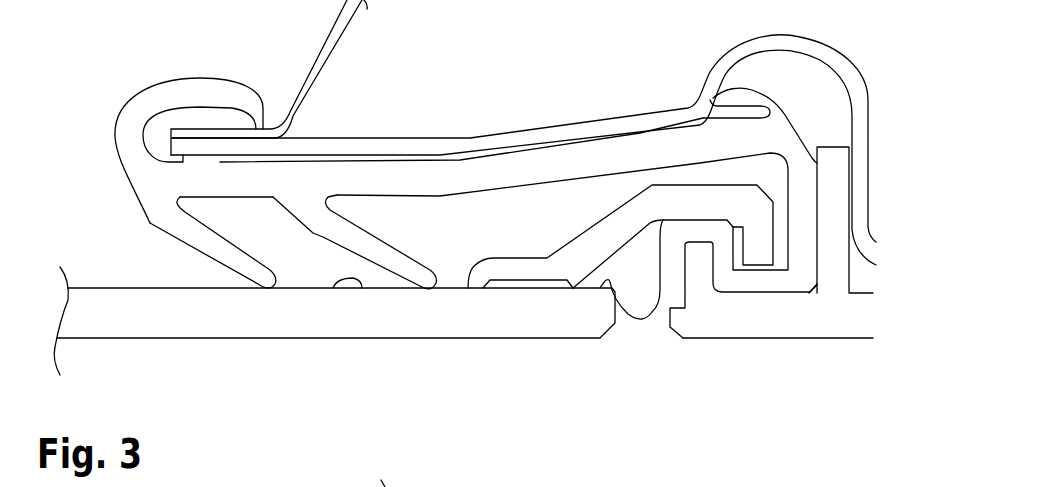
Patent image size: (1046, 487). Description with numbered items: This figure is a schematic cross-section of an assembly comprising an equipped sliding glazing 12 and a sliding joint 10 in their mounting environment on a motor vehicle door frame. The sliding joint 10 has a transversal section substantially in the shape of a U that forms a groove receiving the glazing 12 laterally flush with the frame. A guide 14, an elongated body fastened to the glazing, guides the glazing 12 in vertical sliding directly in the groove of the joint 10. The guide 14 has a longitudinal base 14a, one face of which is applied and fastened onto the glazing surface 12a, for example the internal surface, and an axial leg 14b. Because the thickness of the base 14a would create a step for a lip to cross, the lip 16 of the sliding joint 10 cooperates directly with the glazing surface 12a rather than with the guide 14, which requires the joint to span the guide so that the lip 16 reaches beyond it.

The sliding joint 10 is at (401, 178).
The sliding glazing 12 is at (463, 333).
The glazing surface 12a is at (362, 290).
The guide 14 is at (518, 233).
The longitudinal base 14a is at (518, 268).
The axial leg 14b is at (679, 213).
The lip 16 is at (210, 252).